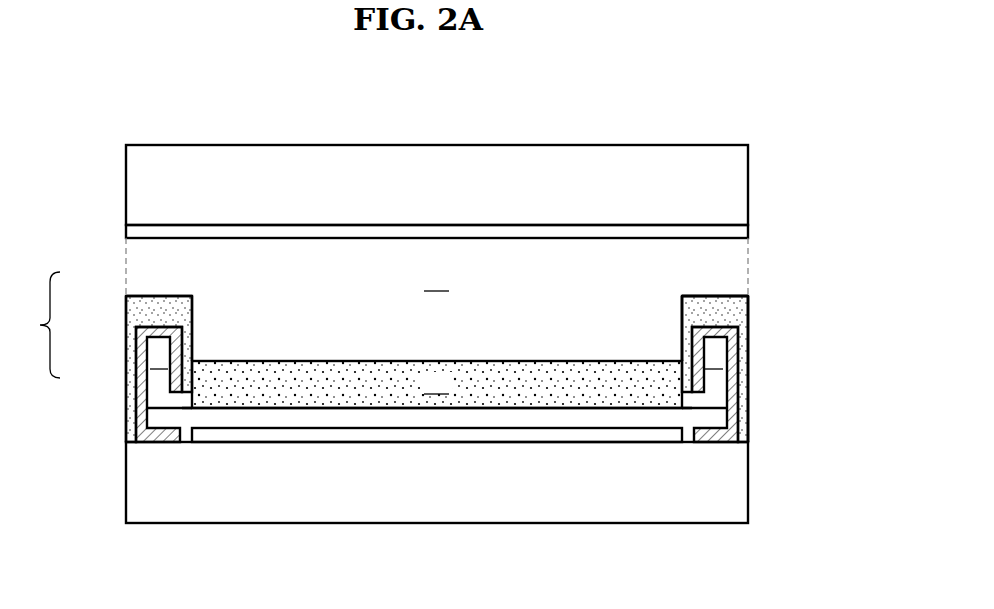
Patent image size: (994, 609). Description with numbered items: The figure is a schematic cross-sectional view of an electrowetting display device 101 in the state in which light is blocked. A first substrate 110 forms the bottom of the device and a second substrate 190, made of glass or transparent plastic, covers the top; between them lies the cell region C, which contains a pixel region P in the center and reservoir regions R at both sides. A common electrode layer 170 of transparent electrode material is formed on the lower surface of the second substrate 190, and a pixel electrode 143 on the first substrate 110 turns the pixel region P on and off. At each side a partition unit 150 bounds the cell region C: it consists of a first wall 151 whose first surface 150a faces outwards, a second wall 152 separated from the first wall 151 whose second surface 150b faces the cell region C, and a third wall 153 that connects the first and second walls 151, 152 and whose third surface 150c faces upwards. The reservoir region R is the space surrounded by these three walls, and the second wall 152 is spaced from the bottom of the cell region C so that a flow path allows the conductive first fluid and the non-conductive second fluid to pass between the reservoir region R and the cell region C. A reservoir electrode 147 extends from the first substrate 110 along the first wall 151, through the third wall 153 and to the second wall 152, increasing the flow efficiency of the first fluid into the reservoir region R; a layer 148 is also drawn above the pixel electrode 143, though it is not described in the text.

The electrowetting display device 101 is at (754, 99).
The first substrate 110 is at (735, 482).
The pixel electrode 143 is at (438, 440).
The reservoir electrode 147 is at (157, 442).
The display unit 148 is at (300, 420).
The partition unit 150 is at (753, 348).
The first surface 150a is at (748, 315).
The second surface 150b is at (681, 312).
The third surface 150c is at (715, 294).
The first wall 151 is at (742, 377).
The second wall 152 is at (690, 342).
The third wall 153 is at (700, 305).
The common electrode layer 170 is at (735, 231).
The second substrate 190 is at (735, 181).
The reservoir region R is at (158, 383).
The pixel region P is at (207, 270).
The cell region C is at (39, 325).